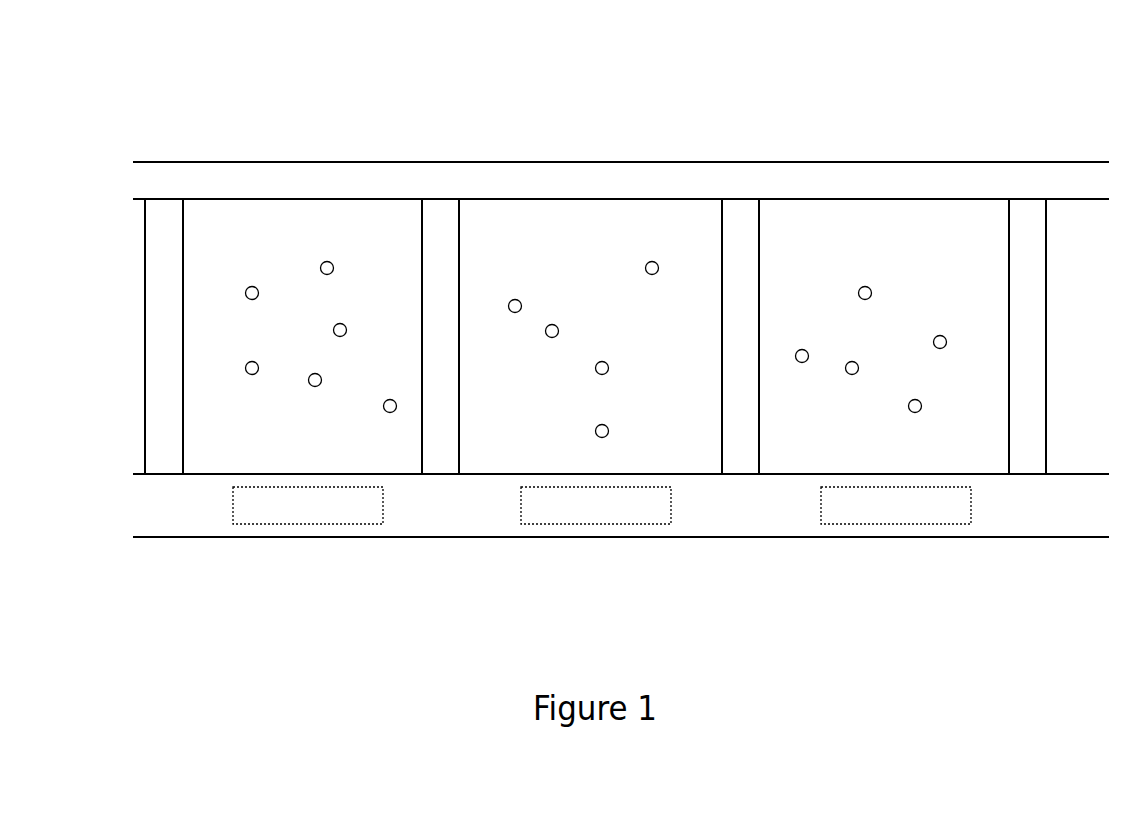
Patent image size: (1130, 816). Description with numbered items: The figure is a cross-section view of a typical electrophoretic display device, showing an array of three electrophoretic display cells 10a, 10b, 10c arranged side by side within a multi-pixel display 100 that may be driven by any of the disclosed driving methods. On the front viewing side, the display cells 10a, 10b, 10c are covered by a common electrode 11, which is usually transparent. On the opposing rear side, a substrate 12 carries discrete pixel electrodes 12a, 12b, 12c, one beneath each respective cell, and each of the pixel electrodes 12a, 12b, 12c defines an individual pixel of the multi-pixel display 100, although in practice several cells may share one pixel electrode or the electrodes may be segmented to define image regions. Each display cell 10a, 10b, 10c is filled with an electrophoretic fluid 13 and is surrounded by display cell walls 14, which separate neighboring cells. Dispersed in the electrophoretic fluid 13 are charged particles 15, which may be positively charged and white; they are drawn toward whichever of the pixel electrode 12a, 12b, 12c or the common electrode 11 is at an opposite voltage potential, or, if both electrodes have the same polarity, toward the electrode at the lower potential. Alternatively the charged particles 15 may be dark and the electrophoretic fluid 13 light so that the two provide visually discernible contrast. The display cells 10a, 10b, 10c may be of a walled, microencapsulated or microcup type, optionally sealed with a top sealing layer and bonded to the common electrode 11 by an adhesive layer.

The multi-pixel display 100 is at (646, 98).
The common electrode 11 is at (197, 173).
The substrate 12 is at (170, 510).
The electrophoretic fluid 13 is at (222, 337).
The display cell walls 14 is at (158, 412).
The charged particles 15 is at (323, 267).
The electrophoretic display cell 10a is at (208, 450).
The electrophoretic display cell 10b is at (497, 450).
The electrophoretic display cell 10c is at (797, 450).
The pixel electrode 12a is at (308, 513).
The pixel electrode 12b is at (596, 513).
The pixel electrode 12c is at (896, 513).